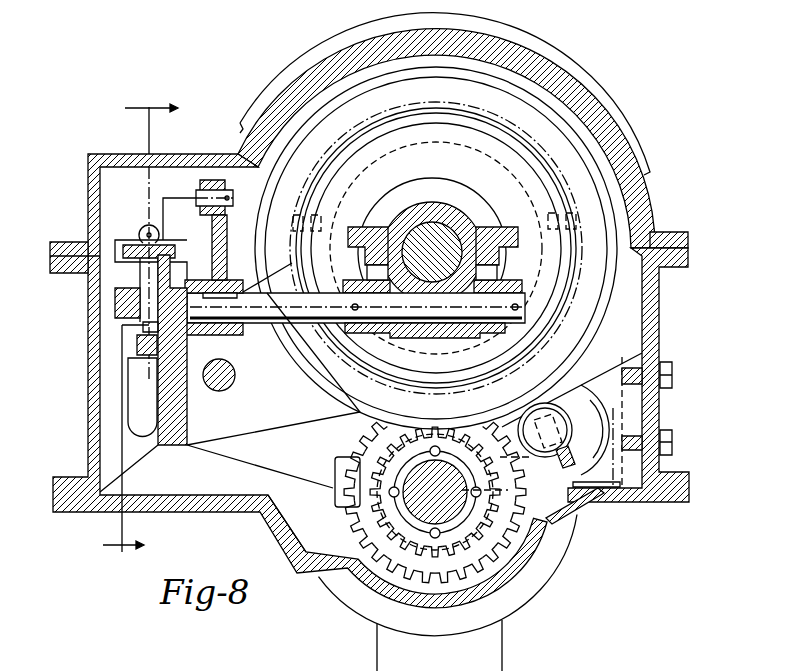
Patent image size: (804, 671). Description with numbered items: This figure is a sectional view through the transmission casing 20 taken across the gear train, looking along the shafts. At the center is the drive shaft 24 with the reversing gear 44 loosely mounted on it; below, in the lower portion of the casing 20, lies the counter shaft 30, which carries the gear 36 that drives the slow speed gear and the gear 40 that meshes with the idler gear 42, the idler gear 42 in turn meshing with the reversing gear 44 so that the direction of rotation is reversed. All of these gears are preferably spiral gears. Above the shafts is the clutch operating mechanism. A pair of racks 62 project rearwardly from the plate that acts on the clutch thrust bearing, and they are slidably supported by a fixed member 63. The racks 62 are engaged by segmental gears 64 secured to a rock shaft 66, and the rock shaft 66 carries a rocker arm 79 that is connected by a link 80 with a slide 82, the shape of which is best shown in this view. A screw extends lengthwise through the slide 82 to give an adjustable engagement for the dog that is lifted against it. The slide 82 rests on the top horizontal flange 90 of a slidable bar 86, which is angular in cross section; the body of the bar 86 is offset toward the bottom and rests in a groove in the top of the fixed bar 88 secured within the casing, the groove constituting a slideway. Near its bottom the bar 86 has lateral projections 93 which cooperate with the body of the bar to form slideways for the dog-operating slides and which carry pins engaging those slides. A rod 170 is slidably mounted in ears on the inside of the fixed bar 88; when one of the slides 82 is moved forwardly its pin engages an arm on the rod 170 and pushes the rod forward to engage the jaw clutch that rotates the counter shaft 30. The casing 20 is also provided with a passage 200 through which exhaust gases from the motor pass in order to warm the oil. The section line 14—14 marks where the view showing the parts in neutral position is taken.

The section line 14— 14 is at (152, 329).
The transmission casing 20 is at (645, 218).
The drive shaft 24 is at (452, 237).
The counter shaft 30 is at (463, 507).
The gear 36 is at (472, 585).
The gear 40 is at (515, 548).
The idler gear 42 is at (605, 414).
The reversing gear 44 is at (530, 312).
The racks 62 is at (386, 228).
The fixed member 63 is at (435, 205).
The segmental gears 64 is at (350, 330).
The rock shaft 66 is at (265, 312).
The rocker arm 79 is at (226, 245).
The link 80 is at (200, 183).
The slide 82 is at (146, 228).
The slidable bar 86 is at (168, 278).
The fixed bar 88 is at (187, 412).
The top horizontal flange 90 is at (128, 243).
The lateral projections 93 is at (115, 302).
The rod 170 is at (235, 382).
The passage 200 is at (293, 525).